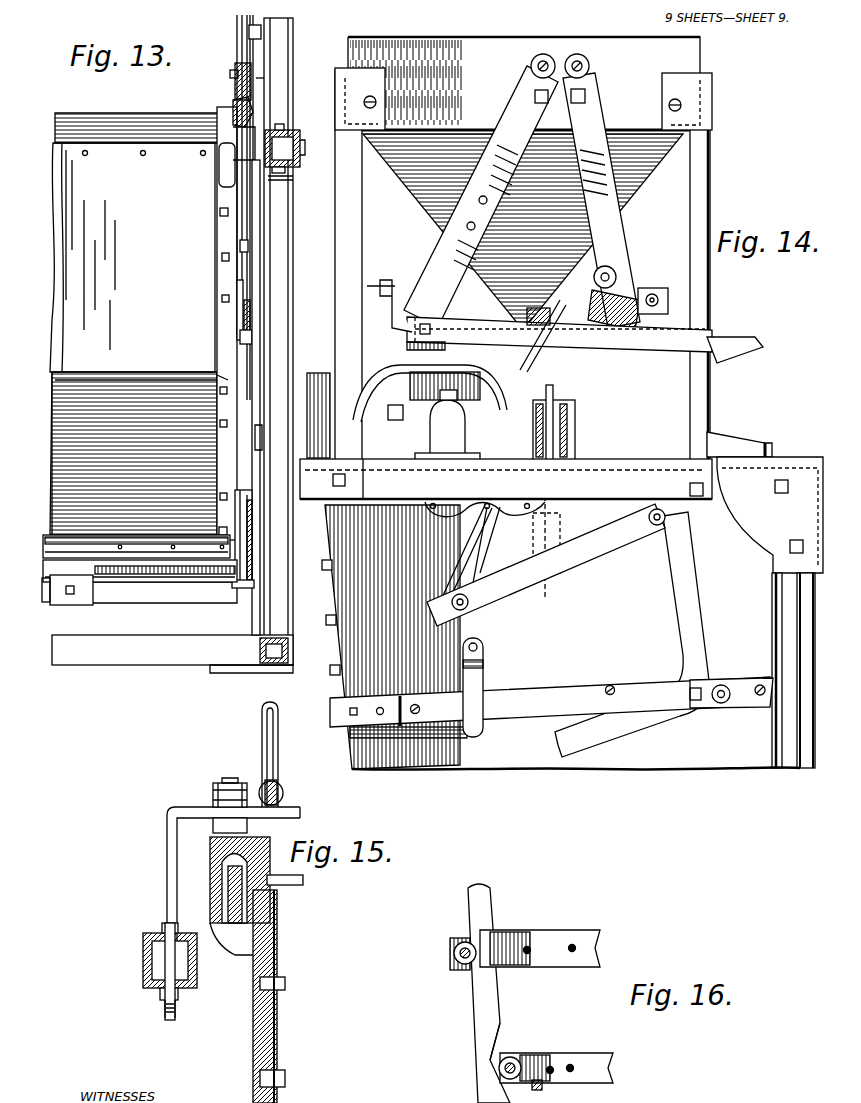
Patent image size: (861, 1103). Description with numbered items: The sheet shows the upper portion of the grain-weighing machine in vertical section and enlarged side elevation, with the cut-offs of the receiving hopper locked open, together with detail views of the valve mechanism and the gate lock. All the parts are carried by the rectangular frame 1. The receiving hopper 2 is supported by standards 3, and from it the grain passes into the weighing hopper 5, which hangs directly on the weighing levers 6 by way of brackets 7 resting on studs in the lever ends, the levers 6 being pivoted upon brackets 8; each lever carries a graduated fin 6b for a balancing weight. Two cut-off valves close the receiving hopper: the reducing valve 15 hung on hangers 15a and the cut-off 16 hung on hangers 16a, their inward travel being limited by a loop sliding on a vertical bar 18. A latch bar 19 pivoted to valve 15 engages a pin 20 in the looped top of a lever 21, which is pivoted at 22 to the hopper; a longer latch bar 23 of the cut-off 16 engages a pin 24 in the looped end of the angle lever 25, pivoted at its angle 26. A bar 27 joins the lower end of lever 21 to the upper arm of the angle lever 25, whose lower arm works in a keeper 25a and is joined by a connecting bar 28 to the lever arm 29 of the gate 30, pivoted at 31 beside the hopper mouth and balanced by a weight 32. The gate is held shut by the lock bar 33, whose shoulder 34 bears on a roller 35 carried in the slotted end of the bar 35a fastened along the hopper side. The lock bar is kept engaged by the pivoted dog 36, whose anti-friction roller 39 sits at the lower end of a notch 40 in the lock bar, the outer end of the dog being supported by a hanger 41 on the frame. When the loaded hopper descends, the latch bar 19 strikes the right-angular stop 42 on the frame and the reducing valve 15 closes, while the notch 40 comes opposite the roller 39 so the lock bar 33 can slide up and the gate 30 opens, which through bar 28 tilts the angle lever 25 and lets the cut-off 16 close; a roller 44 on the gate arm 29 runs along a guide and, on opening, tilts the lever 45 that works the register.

In FIG. 13, the rectangular frame 1 is at (297, 140).
In FIG. 14, the rectangular frame 1 is at (745, 586).
In FIG. 15, the rectangular frame 1 is at (143, 962).
In FIG. 14, the receiving hopper 2 is at (524, 81).
In FIG. 13, the standards 3 is at (294, 45).
In FIG. 14, the standards 3 is at (360, 216).
In FIG. 13, the weighing hopper 5 is at (108, 262).
In FIG. 14, the weighing hopper 5 is at (340, 600).
In FIG. 15, the weighing hopper 5 is at (277, 1030).
In FIG. 13, the weighing levers 6 is at (237, 127).
In FIG. 14, the weighing levers 6 is at (388, 408).
In FIG. 15, the weighing levers 6 is at (222, 785).
In FIG. 13, the fin 6b is at (235, 92).
In FIG. 14, the fin 6b is at (318, 372).
In FIG. 14, the brackets 7 is at (572, 420).
In FIG. 15, the brackets 7 is at (255, 1015).
In FIG. 14, the brackets 8 is at (445, 467).
In FIG. 15, the brackets 8 is at (218, 965).
In FIG. 14, the cut-off valve 15 is at (558, 330).
In FIG. 14, the hangers 15a is at (628, 235).
In FIG. 14, the cut-off valve 16 is at (392, 322).
In FIG. 14, the hangers 16a is at (430, 258).
In FIG. 13, the vertical bar 18 is at (296, 180).
In FIG. 13, the latch bar 19 is at (232, 77).
In FIG. 14, the latch bar 19 is at (480, 372).
In FIG. 15, the latch bar 19 is at (278, 784).
In FIG. 14, the pin 20 is at (500, 390).
In FIG. 13, the lever 21 is at (237, 45).
In FIG. 14, the lever 21 is at (545, 302).
In FIG. 15, the lever 21 is at (278, 755).
In FIG. 14, the pivot 22 is at (475, 515).
In FIG. 13, the latch bar 23 is at (248, 24).
In FIG. 14, the latch bar 23 is at (732, 337).
In FIG. 14, the pin 24 is at (636, 332).
In FIG. 13, the angle lever 25 is at (255, 220).
In FIG. 14, the angle lever 25 is at (620, 300).
In FIG. 14, the keeper 25a is at (485, 680).
In FIG. 14, the pivot 26 is at (712, 680).
In FIG. 13, the bar 27 is at (240, 245).
In FIG. 14, the bar 27 is at (510, 590).
In FIG. 13, the connecting bar 28 is at (256, 447).
In FIG. 13, the lever arm 29 is at (200, 380).
In FIG. 13, the gate 30 is at (145, 575).
In FIG. 13, the pivot 31 is at (180, 580).
In FIG. 13, the weight 32 is at (85, 607).
In FIG. 13, the lock bar 33 is at (237, 299).
In FIG. 16, the lock bar 33 is at (476, 985).
In FIG. 16, the shoulder 34 is at (478, 965).
In FIG. 13, the roller 35 is at (238, 338).
In FIG. 16, the roller 35 is at (454, 957).
In FIG. 13, the bar 35a is at (242, 330).
In FIG. 14, the bar 35a is at (550, 707).
In FIG. 16, the bar 35a is at (466, 940).
In FIG. 16, the dog 36 is at (585, 1047).
In FIG. 16, the anti-friction roller 39 is at (516, 1056).
In FIG. 16, the notch 40 is at (490, 1057).
In FIG. 13, the hanger 41 is at (235, 452).
In FIG. 16, the hanger 41 is at (539, 1091).
In FIG. 13, the stop 42 is at (270, 78).
In FIG. 14, the stop 42 is at (568, 447).
In FIG. 15, the stop 42 is at (298, 810).
In FIG. 13, the anti-friction roller 44 is at (252, 580).
In FIG. 13, the lever 45 is at (255, 534).